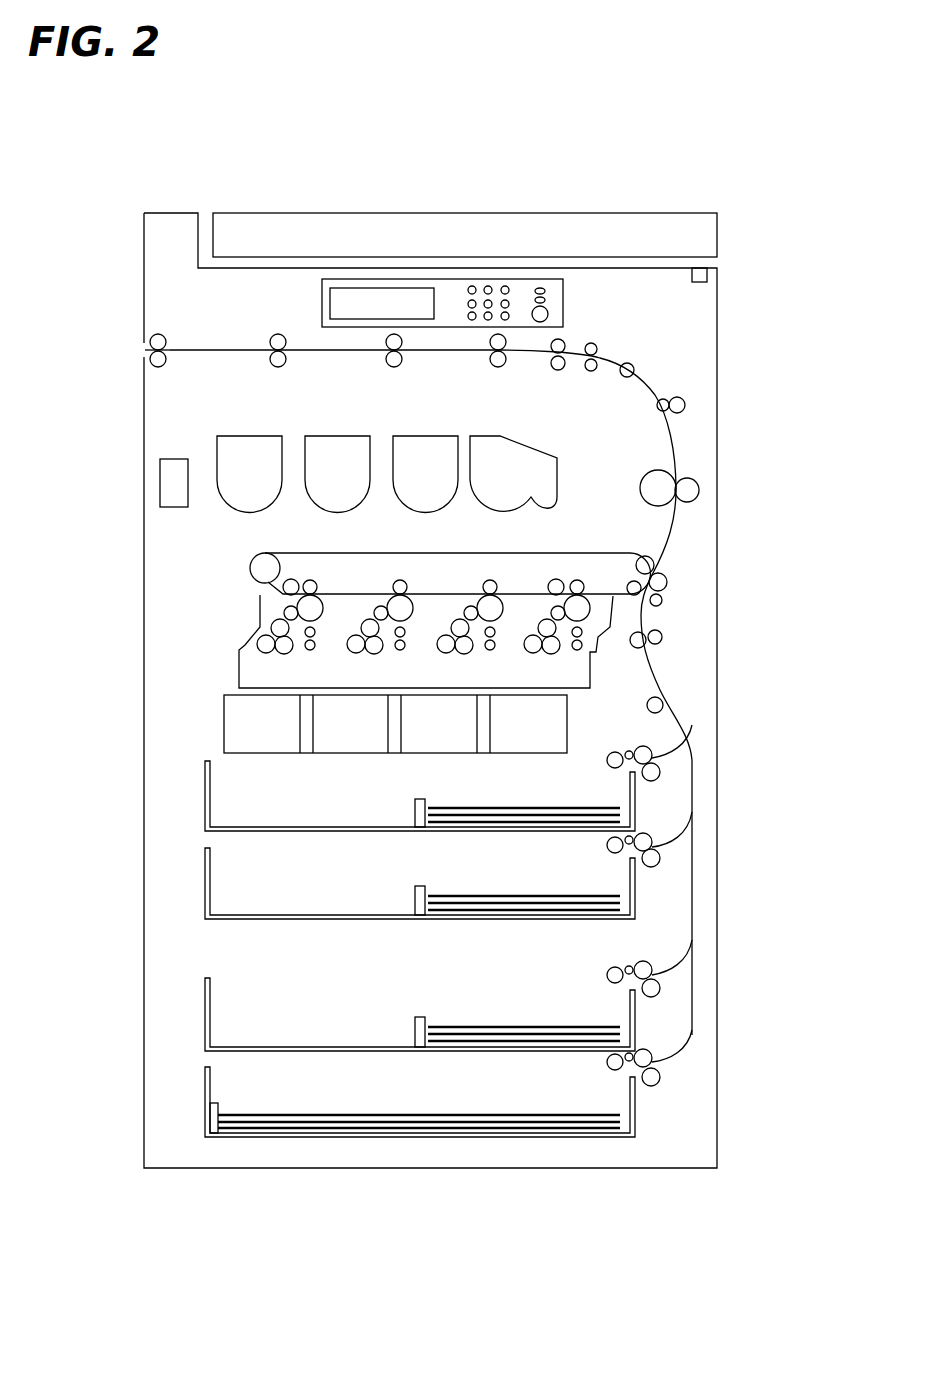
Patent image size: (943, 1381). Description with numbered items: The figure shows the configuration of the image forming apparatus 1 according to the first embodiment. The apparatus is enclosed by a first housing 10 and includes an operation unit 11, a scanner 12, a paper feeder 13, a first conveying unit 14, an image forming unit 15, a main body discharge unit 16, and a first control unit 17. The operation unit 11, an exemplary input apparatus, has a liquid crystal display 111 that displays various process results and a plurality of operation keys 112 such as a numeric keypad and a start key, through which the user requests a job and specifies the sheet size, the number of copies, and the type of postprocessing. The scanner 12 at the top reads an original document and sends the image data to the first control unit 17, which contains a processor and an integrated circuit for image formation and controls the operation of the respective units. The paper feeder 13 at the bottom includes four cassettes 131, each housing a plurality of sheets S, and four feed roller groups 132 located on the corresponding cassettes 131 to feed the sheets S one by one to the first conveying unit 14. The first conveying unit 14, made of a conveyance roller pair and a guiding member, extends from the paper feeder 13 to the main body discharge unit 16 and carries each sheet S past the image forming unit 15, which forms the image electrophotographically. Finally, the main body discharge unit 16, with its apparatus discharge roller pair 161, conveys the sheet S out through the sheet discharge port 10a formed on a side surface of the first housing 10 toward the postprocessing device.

The image forming apparatus 1 is at (672, 182).
The first housing 10 is at (718, 308).
The sheet discharge port 10a is at (140, 350).
The operation unit 11 is at (565, 305).
The liquid crystal display 111 is at (322, 298).
The operation keys 112 is at (463, 280).
The scanner 12 is at (733, 260).
The paper feeder 13 is at (125, 932).
The cassette 131 is at (205, 1012).
The feed roller group 132 is at (603, 965).
The first conveying unit 14 is at (228, 335).
The image forming unit 15 is at (118, 650).
The main body discharge unit 16 is at (190, 362).
The apparatus discharge roller pair 161 is at (176, 350).
The first control unit 17 is at (160, 483).
The sheet S is at (490, 808).